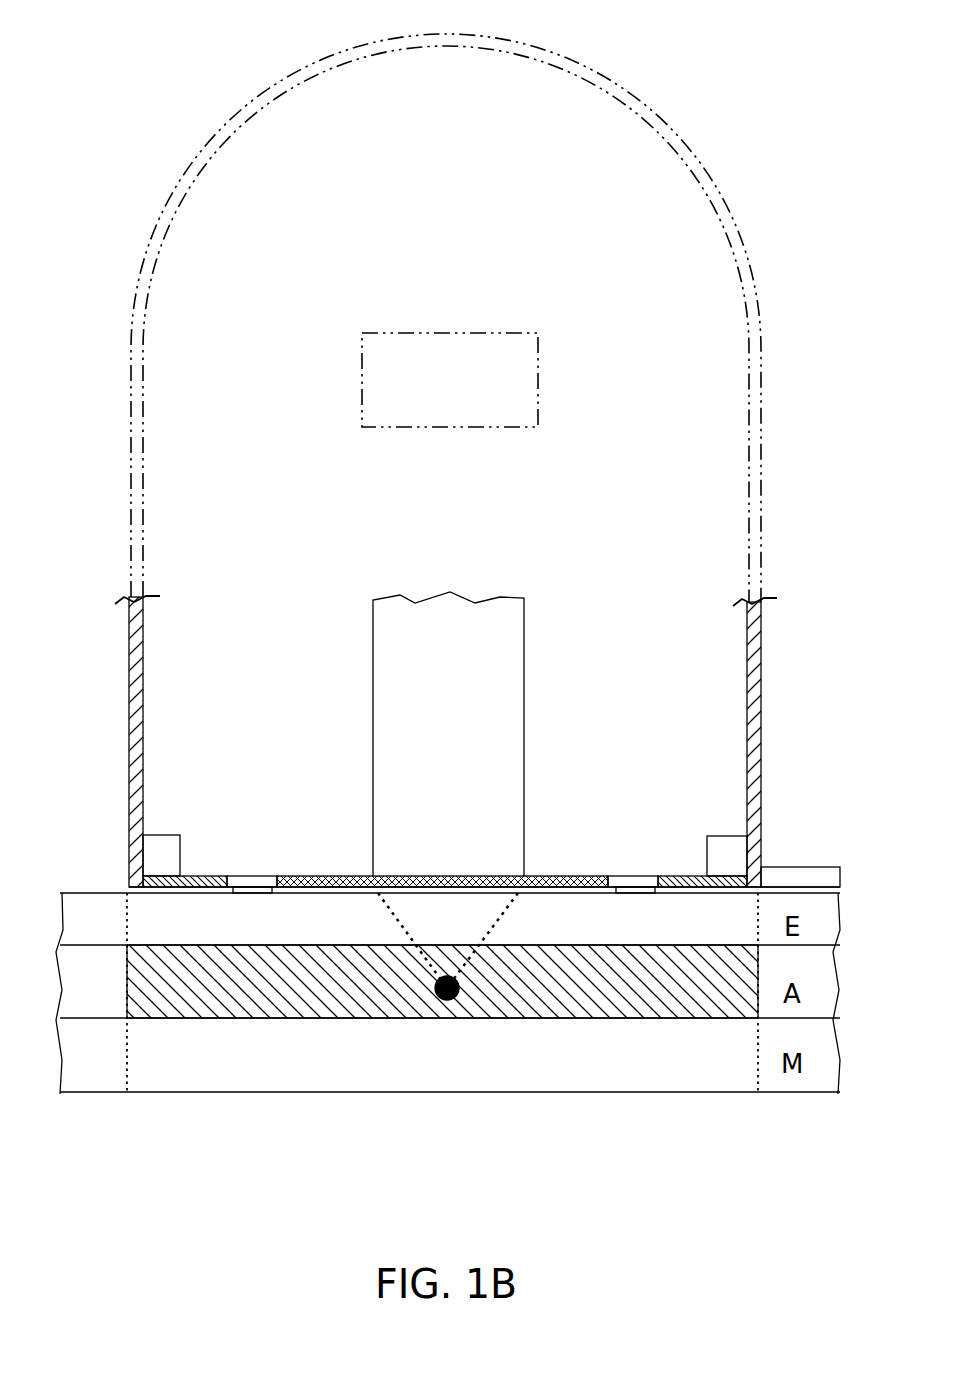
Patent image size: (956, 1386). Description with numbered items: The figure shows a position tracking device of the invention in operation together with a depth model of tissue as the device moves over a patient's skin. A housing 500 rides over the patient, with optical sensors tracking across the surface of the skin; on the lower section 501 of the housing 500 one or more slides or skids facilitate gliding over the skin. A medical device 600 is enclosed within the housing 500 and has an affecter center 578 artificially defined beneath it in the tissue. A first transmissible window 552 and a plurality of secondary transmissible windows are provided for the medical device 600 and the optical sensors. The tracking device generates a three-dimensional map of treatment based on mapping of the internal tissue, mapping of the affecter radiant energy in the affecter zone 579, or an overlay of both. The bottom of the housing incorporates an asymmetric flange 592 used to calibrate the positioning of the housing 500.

The lower section 501 is at (778, 702).
The housing 500 is at (482, 397).
The medical device 600 is at (478, 733).
The first transmissible window 552 is at (353, 876).
The affecter center 578 is at (436, 1001).
The affecter zone 579 is at (535, 992).
The asymmetric flange 592 is at (782, 867).